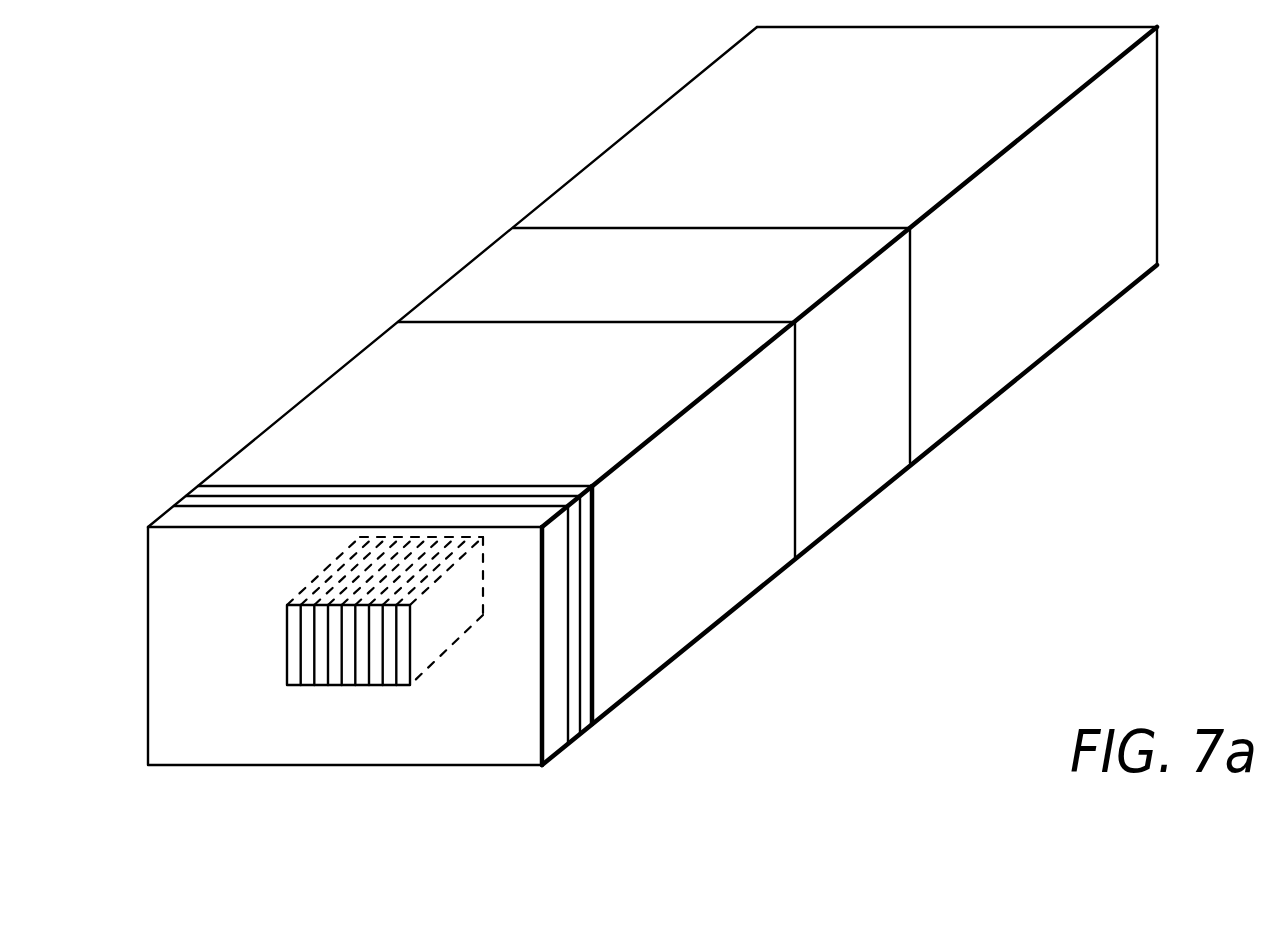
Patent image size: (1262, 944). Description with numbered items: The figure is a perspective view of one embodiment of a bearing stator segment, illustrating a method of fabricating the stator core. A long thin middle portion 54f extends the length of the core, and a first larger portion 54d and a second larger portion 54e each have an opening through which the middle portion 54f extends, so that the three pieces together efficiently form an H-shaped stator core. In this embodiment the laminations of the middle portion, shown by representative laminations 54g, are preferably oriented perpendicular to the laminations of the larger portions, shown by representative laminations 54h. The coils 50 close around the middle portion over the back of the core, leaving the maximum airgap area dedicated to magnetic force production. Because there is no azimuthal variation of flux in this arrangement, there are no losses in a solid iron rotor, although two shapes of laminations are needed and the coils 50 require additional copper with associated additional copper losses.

The coil 50 is at (855, 490).
The first larger portion 54d is at (1090, 305).
The second larger portion 54e is at (735, 588).
The middle portion 54f is at (305, 685).
The middle portion laminations 54g is at (362, 683).
The larger portion laminations 54h is at (194, 494).